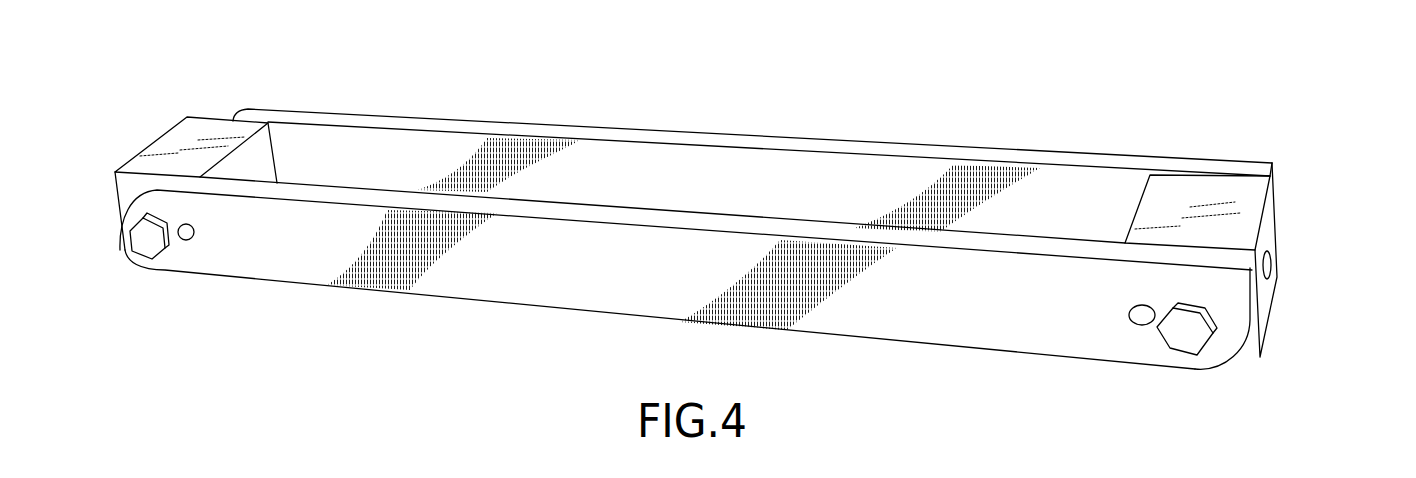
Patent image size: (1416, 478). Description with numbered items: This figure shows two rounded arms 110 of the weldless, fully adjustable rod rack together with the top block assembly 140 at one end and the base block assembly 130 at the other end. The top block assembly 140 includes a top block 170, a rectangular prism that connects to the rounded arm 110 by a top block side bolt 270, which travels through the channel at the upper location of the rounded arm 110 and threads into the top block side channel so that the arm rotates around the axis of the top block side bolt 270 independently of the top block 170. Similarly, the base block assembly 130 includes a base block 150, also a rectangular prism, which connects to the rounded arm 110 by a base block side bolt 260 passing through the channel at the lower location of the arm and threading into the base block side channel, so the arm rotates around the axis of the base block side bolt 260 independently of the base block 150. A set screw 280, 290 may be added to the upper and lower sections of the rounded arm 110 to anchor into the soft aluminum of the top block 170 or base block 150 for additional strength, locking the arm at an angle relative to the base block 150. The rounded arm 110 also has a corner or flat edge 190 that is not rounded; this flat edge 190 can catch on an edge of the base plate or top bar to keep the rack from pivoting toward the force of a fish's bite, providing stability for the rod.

The rounded arm 110 is at (455, 123).
The base block assembly 130 is at (1201, 251).
The top block assembly 140 is at (228, 197).
The base block 150 is at (1267, 225).
The top block 170 is at (173, 140).
The flat edge 190 is at (1230, 285).
The base block side bolt 260 is at (1182, 340).
The top block side bolt 270 is at (147, 247).
The set screw 280 is at (187, 240).
The set screw 290 is at (1133, 318).